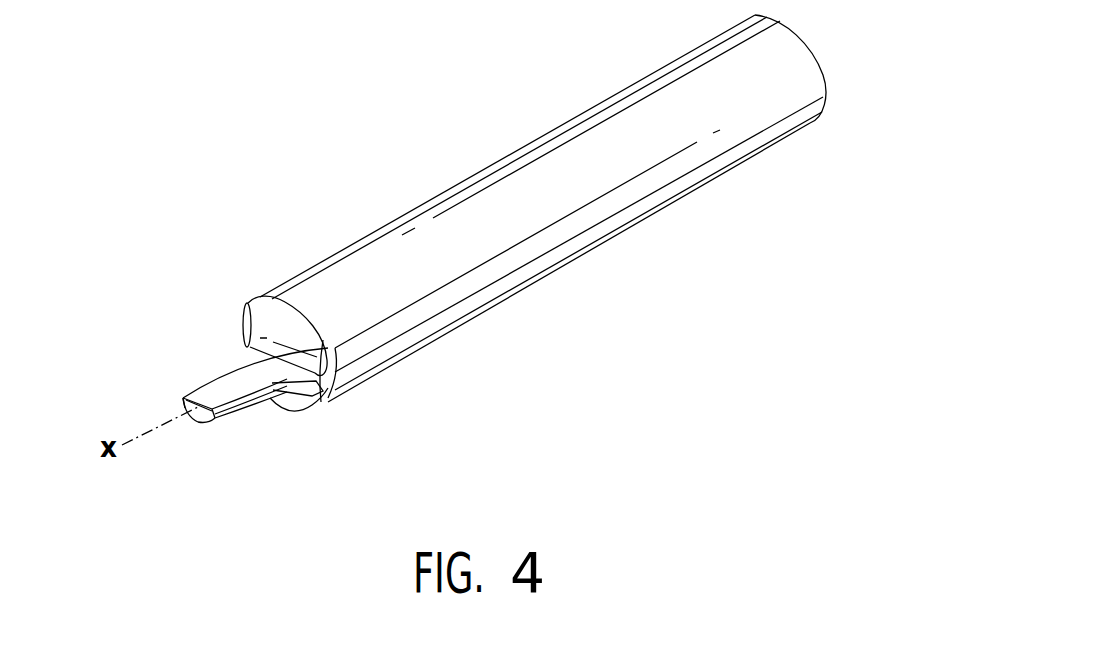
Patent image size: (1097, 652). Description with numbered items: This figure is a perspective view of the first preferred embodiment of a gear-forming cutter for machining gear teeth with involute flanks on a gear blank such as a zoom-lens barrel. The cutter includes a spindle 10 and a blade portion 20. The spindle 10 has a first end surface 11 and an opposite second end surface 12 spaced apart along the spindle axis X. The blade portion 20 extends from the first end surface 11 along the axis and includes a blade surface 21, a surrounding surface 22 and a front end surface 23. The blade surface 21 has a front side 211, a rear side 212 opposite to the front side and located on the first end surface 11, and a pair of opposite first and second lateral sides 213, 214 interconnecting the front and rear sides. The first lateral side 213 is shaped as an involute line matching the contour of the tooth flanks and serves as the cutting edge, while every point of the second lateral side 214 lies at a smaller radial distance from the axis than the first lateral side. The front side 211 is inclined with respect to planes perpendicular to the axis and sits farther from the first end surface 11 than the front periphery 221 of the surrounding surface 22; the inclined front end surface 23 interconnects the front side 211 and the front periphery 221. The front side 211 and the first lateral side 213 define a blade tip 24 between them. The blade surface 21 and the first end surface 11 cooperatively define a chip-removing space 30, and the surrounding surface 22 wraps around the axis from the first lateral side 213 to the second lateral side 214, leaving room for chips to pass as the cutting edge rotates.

The spindle 10 is at (486, 155).
The first end surface 11 is at (280, 320).
The second end surface 12 is at (817, 62).
The blade portion 20 is at (203, 358).
The blade surface 21 is at (228, 373).
The surrounding surface 22 is at (257, 398).
The front end surface 23 is at (195, 417).
The blade tip 24 is at (213, 421).
The chip-removing space 30 is at (240, 365).
The front side 211 is at (183, 399).
The rear side 212 is at (293, 363).
The first lateral side 213 is at (280, 400).
The second lateral side 214 is at (203, 386).
The front periphery 221 is at (199, 425).